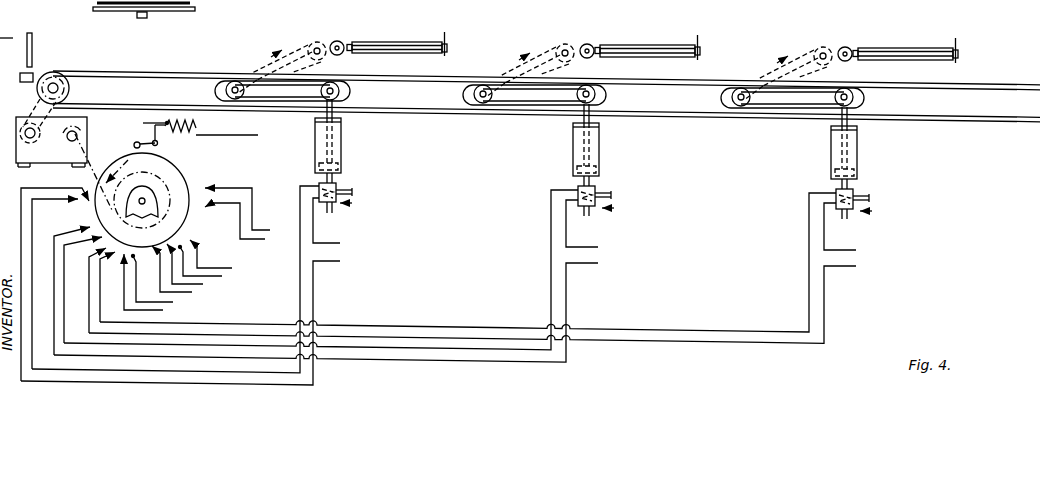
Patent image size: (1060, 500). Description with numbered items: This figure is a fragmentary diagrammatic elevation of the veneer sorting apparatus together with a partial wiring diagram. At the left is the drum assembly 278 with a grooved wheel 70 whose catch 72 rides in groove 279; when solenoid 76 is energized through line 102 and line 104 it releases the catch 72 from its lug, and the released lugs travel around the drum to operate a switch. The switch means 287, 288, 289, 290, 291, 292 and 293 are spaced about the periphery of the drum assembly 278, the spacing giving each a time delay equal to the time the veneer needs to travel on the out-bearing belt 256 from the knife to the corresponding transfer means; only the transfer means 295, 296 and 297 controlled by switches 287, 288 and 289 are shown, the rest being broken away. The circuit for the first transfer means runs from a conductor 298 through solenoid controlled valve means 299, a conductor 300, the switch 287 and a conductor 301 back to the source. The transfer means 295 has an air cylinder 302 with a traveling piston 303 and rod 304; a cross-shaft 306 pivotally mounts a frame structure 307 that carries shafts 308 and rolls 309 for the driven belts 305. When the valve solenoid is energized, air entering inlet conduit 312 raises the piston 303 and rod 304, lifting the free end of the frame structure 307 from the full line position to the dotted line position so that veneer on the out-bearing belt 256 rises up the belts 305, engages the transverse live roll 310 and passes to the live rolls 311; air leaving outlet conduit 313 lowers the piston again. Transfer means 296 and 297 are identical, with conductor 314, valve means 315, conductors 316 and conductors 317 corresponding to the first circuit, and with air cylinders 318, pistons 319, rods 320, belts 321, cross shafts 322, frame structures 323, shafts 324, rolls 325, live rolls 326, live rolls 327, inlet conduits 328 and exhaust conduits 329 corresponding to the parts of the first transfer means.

The grooved wheel 70 is at (200, 188).
The catch 72 is at (135, 143).
The solenoid 76 is at (178, 136).
The line 102 is at (216, 135).
The line 104 is at (143, 123).
The out-bearing belt 256 is at (89, 66).
The drum assembly 278 is at (186, 172).
The groove 279 is at (196, 10).
The switch 287 is at (76, 204).
The switch 288 is at (95, 241).
The switch 289 is at (107, 258).
The switch 290 is at (146, 264).
The switch 291 is at (176, 258).
The switch 292 is at (192, 240).
The switch 293 is at (207, 208).
The transfer means 295 is at (290, 46).
The transfer means 296 is at (539, 49).
The transfer means 297 is at (779, 45).
The conductor 298 is at (314, 235).
The solenoid controlled valve means 299 is at (354, 203).
The conductor 300 is at (299, 279).
The conductor 301 is at (60, 188).
The air cylinder 302 is at (342, 138).
The piston 303 is at (342, 157).
The rod 304 is at (342, 116).
The driven belts 305 is at (313, 64).
The cross-shaft 306 is at (225, 90).
The frame structure 307 is at (289, 94).
The shafts 308 is at (340, 91).
The rolls 309 is at (324, 83).
The live roll 310 is at (340, 41).
The live rolls 311 is at (392, 42).
The inlet conduit 312 is at (353, 189).
The outlet conduit 313 is at (334, 208).
The conductor 314 is at (567, 235).
The valve means 315 is at (616, 208).
The conductor 316 is at (550, 234).
The conductor 317 is at (567, 291).
The air cylinder 318 is at (599, 141).
The piston 319 is at (599, 161).
The rod 320 is at (872, 122).
The belts 321 is at (566, 84).
The cross shaft 322 is at (473, 95).
The frame structure 323 is at (557, 98).
The shaft 324 is at (596, 96).
The rolls 325 is at (592, 89).
The live roll 326 is at (591, 44).
The live rolls 327 is at (651, 45).
The inlet conduit 328 is at (599, 188).
The exhaust conduit 329 is at (592, 214).